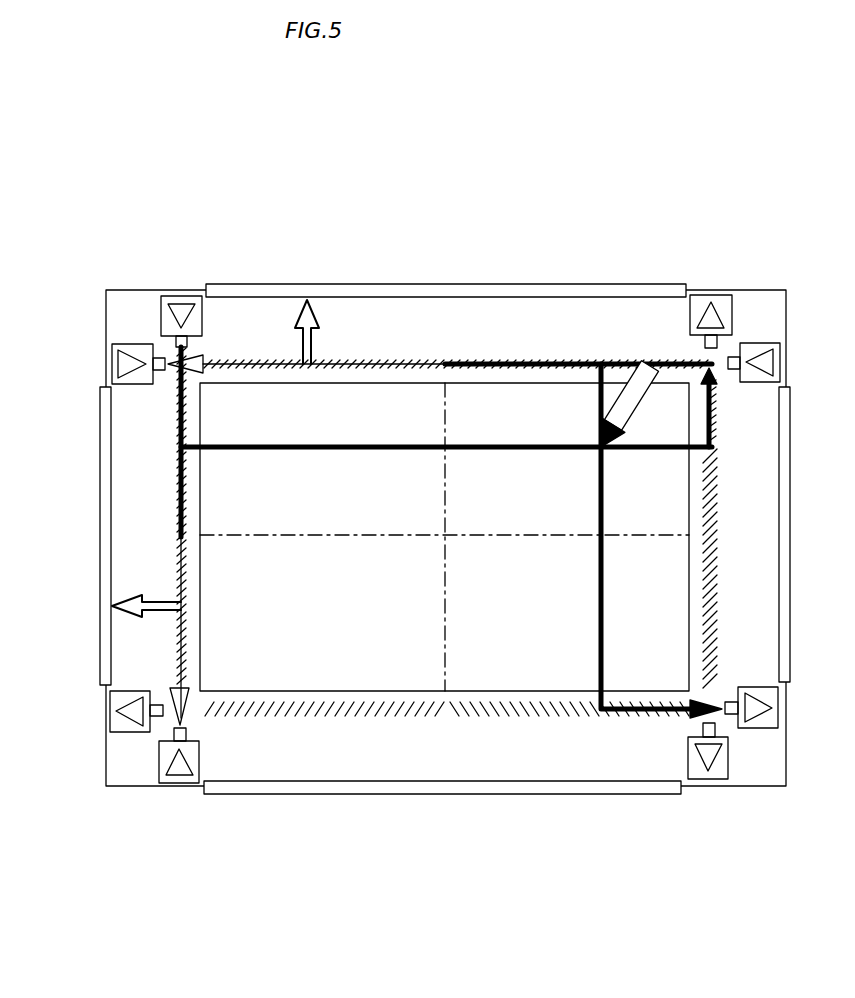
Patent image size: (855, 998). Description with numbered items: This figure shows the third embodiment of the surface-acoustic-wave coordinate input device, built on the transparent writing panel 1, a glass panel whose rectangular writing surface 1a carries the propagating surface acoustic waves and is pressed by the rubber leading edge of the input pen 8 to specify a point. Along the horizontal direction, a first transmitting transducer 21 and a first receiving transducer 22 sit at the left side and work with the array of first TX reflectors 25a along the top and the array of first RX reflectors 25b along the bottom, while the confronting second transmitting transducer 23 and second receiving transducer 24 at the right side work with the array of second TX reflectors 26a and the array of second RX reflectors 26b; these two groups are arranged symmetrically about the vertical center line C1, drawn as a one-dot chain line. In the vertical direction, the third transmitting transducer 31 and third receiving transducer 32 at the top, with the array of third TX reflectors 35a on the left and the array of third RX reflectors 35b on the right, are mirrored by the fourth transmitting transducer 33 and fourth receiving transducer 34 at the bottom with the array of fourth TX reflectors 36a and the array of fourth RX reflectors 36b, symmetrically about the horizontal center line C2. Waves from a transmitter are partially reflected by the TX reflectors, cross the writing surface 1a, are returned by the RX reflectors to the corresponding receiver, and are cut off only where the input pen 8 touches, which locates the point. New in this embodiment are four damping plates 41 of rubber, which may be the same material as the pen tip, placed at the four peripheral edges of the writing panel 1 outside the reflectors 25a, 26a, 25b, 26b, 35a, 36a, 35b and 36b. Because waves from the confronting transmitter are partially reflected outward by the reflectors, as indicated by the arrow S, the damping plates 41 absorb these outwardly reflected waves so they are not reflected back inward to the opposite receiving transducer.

The transparent writing panel 1 is at (434, 280).
The writing surface 1a is at (298, 663).
The input pen 8 is at (640, 375).
The first transmitting transducer 21 is at (142, 358).
The first receiving transducer 22 is at (124, 725).
The second transmitting transducer 23 is at (751, 356).
The second receiving transducer 24 is at (765, 720).
The third transmitting transducer 31 is at (170, 318).
The third receiving transducer 32 is at (720, 302).
The fourth transmitting transducer 33 is at (192, 754).
The fourth receiving transducer 34 is at (720, 768).
The array of first TX reflectors 25a is at (338, 348).
The array of second TX reflectors 26a is at (540, 343).
The array of first RX reflectors 25b is at (348, 735).
The array of second RX reflectors 26b is at (552, 735).
The array of third TX reflectors 35a is at (179, 465).
The array of third RX reflectors 35b is at (714, 462).
The array of fourth TX reflectors 36a is at (177, 553).
The array of fourth RX reflectors 36b is at (716, 581).
The damping plate 41 is at (252, 292).
The vertical center line C1 is at (446, 512).
The horizontal center line C2 is at (330, 537).
The arrow S is at (303, 336).